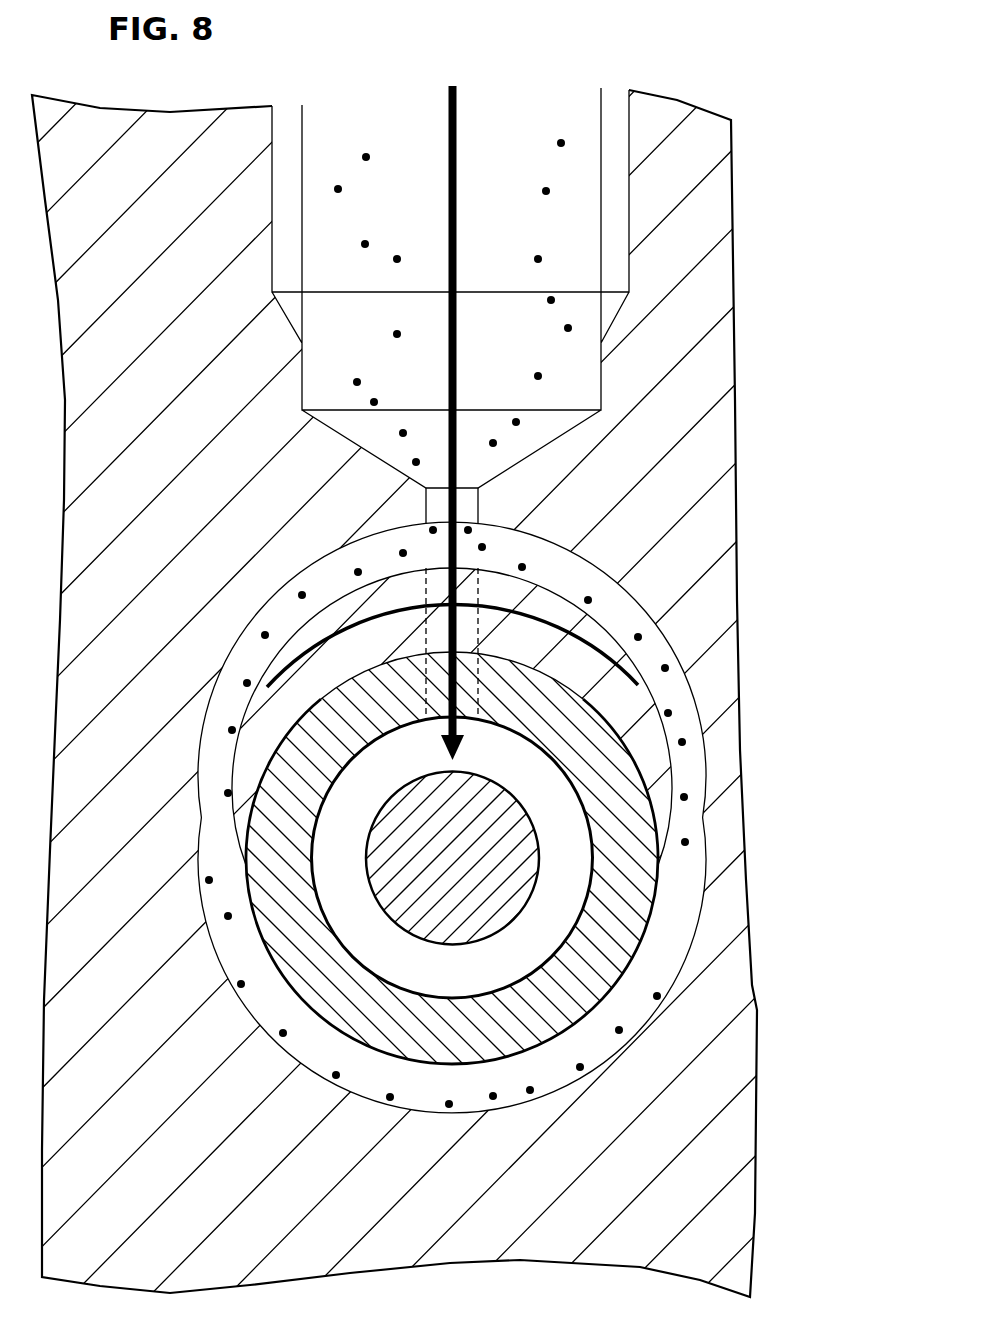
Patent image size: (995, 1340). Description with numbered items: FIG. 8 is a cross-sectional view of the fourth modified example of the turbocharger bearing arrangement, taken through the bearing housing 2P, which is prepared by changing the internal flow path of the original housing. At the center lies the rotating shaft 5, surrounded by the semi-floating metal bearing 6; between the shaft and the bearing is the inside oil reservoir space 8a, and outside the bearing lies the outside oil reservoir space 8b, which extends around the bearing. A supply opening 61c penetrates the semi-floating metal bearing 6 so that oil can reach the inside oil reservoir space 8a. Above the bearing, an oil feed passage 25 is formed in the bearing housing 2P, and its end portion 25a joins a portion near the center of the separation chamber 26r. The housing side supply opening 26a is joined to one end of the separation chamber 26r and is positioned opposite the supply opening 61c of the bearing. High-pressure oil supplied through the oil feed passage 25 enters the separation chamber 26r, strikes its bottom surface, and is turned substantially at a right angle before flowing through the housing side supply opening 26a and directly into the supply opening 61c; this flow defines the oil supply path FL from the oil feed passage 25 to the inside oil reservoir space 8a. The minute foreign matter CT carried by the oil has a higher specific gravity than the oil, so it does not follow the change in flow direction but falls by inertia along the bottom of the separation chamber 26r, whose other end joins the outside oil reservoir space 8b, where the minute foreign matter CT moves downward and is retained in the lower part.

The oil supply path FL is at (448, 137).
The oil feed passage 25 is at (486, 118).
The minute foreign matter CT is at (562, 140).
The bearing housing 2P is at (716, 221).
The end portion of the oil feed passage 25a is at (467, 513).
The separation chamber 26r is at (652, 650).
The housing side supply opening 26a is at (478, 575).
The outside oil reservoir space 8b is at (632, 722).
The supply opening 61c is at (478, 700).
The rotating shaft 5 is at (512, 823).
The semi-floating metal bearing 6 is at (620, 847).
The inside oil reservoir space 8a is at (567, 880).